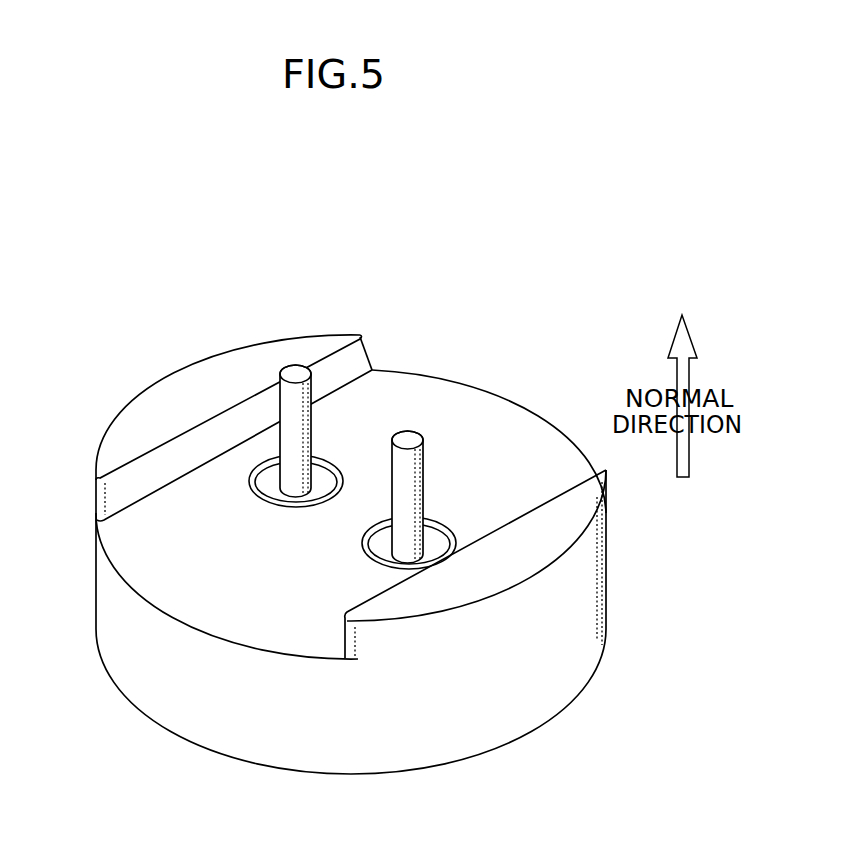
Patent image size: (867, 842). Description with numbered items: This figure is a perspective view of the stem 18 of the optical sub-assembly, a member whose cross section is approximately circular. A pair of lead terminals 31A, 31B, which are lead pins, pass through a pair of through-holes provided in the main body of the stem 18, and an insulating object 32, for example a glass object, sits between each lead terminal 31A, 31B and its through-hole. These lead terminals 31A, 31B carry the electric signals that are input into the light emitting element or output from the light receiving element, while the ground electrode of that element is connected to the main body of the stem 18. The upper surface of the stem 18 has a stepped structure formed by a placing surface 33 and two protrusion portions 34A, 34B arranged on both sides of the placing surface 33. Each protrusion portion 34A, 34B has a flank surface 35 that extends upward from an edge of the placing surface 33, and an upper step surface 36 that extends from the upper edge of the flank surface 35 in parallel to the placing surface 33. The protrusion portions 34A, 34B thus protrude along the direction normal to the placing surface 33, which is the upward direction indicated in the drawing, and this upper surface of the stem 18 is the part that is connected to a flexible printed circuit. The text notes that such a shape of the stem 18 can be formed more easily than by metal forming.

The stem 18 is at (528, 338).
The lead terminal 31A is at (295, 424).
The lead terminal 31B is at (413, 478).
The insulating object 32 is at (333, 483).
The placing surface 33 is at (187, 598).
The protrusion portion 34A is at (78, 420).
The protrusion portion 34B is at (617, 473).
The flank surface 35 is at (143, 483).
The upper step surface 36 is at (150, 397).